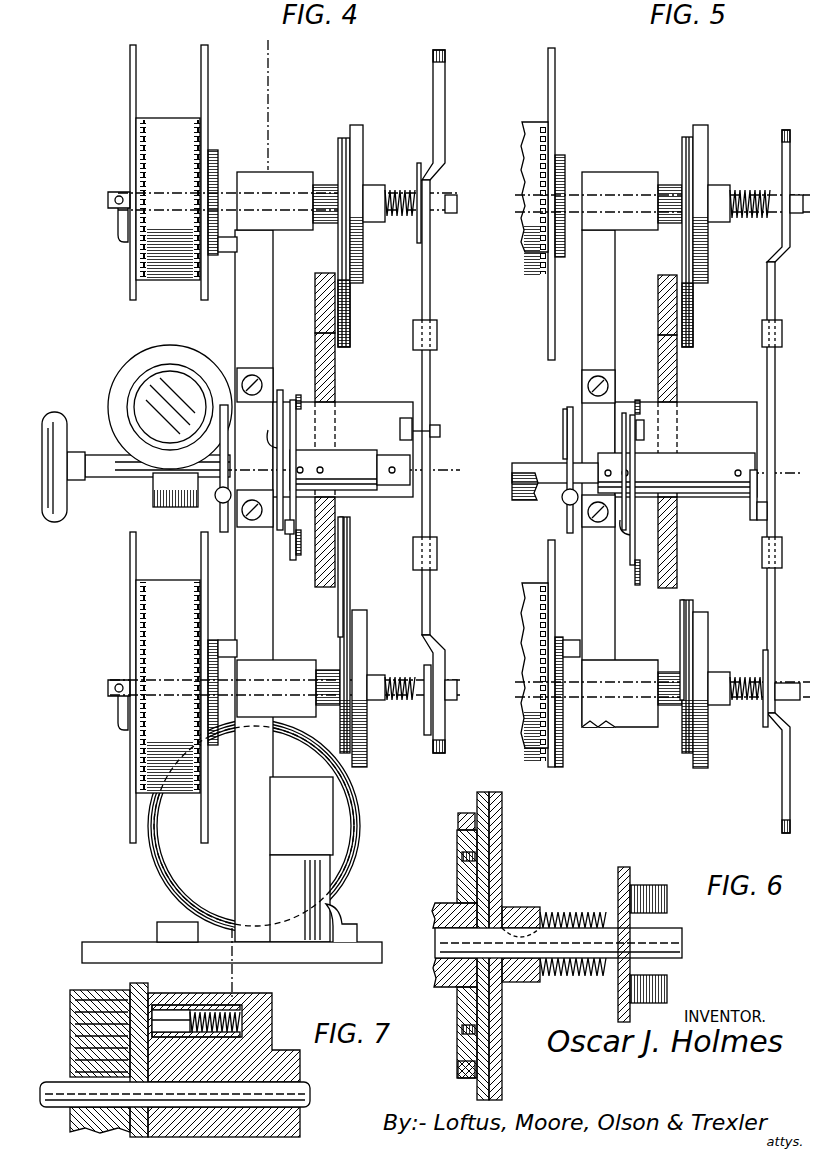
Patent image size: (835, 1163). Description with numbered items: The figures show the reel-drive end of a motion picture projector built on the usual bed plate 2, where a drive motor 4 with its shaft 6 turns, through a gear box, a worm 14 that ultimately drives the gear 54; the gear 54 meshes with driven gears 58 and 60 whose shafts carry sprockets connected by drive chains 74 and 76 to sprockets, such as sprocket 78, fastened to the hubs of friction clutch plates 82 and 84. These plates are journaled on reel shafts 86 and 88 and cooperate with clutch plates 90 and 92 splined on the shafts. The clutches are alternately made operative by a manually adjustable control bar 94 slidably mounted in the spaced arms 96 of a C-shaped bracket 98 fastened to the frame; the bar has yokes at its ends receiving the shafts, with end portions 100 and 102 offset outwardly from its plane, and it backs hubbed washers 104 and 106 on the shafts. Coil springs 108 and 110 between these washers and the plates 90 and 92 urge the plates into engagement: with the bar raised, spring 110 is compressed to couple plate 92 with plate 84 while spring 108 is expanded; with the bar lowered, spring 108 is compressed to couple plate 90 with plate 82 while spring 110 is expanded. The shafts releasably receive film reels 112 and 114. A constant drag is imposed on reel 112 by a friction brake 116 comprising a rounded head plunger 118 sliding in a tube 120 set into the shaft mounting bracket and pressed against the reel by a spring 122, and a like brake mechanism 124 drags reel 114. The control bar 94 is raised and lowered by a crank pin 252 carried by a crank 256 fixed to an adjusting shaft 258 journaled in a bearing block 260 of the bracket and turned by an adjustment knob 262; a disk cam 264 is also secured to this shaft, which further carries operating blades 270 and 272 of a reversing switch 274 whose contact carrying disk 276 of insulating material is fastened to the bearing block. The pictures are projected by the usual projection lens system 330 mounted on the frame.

In FIG. 4, the bed plate 2 is at (290, 55).
In FIG. 7, the bed plate 2 is at (209, 975).
In FIG. 4, the drive motor 4 is at (150, 847).
In FIG. 5, the motor shaft 6 is at (668, 690).
In FIG. 4, the worm 14 is at (270, 362).
In FIG. 5, the worm 14 is at (598, 448).
In FIG. 4, the gear 54 is at (335, 374).
In FIG. 5, the gear 54 is at (677, 382).
In FIG. 4, the driven gear 58 is at (335, 531).
In FIG. 5, the driven gear 58 is at (677, 556).
In FIG. 4, the driven gear 60 is at (315, 284).
In FIG. 5, the driven gear 60 is at (664, 276).
In FIG. 4, the drive chain 74 is at (342, 595).
In FIG. 5, the drive chain 74 is at (683, 600).
In FIG. 6, the drive chain 74 is at (462, 819).
In FIG. 4, the drive chain 76 is at (350, 292).
In FIG. 5, the drive chain 76 is at (693, 291).
In FIG. 6, the sprocket 78 is at (460, 880).
In FIG. 4, the friction clutch plate 82 is at (355, 627).
In FIG. 5, the friction clutch plate 82 is at (700, 620).
In FIG. 6, the friction clutch plate 82 is at (505, 855).
In FIG. 4, the friction clutch plate 84 is at (344, 136).
In FIG. 5, the friction clutch plate 84 is at (690, 135).
In FIG. 4, the reel shaft 86 is at (450, 688).
In FIG. 5, the reel shaft 86 is at (786, 683).
In FIG. 6, the reel shaft 86 is at (660, 941).
In FIG. 7, the reel shaft 86 is at (296, 1090).
In FIG. 4, the reel shaft 88 is at (446, 214).
In FIG. 5, the reel shaft 88 is at (798, 214).
In FIG. 4, the clutch plate 90 is at (370, 631).
In FIG. 5, the clutch plate 90 is at (710, 613).
In FIG. 6, the clutch plate 90 is at (504, 883).
In FIG. 4, the clutch plate 92 is at (360, 140).
In FIG. 5, the clutch plate 92 is at (705, 130).
In FIG. 4, the control bar 94 is at (430, 291).
In FIG. 5, the control bar 94 is at (767, 300).
In FIG. 4, the spaced arms 96 is at (437, 337).
In FIG. 5, the spaced arms 96 is at (779, 344).
In FIG. 4, the C-shaped bracket 98 is at (370, 407).
In FIG. 5, the C-shaped bracket 98 is at (710, 407).
In FIG. 4, the offset end portion 100 is at (442, 733).
In FIG. 5, the offset end portion 100 is at (784, 763).
In FIG. 6, the offset end portion 100 is at (642, 885).
In FIG. 4, the offset end portion 102 is at (437, 98).
In FIG. 5, the offset end portion 102 is at (787, 130).
In FIG. 4, the hubbed washer 104 is at (428, 724).
In FIG. 5, the hubbed washer 104 is at (765, 727).
In FIG. 6, the hubbed washer 104 is at (621, 868).
In FIG. 4, the hubbed washer 106 is at (417, 243).
In FIG. 4, the coil spring 108 is at (405, 673).
In FIG. 5, the coil spring 108 is at (742, 667).
In FIG. 6, the coil spring 108 is at (557, 912).
In FIG. 4, the coil spring 110 is at (396, 189).
In FIG. 5, the coil spring 110 is at (750, 190).
In FIG. 4, the film reel 112 is at (130, 767).
In FIG. 5, the film reel 112 is at (548, 566).
In FIG. 7, the film reel 112 is at (130, 981).
In FIG. 4, the film reel 114 is at (130, 88).
In FIG. 5, the film reel 114 is at (555, 100).
In FIG. 4, the friction brake 116 is at (222, 640).
In FIG. 5, the friction brake 116 is at (567, 636).
In FIG. 7, the friction brake 116 is at (160, 996).
In FIG. 7, the rounded head plunger 118 is at (177, 1013).
In FIG. 7, the tube 120 is at (200, 1005).
In FIG. 7, the spring 122 is at (232, 1024).
In FIG. 4, the brake mechanism 124 is at (224, 266).
In FIG. 5, the brake mechanism 124 is at (573, 268).
In FIG. 4, the crank pin 252 is at (440, 428).
In FIG. 5, the crank pin 252 is at (777, 508).
In FIG. 4, the crank 256 is at (410, 446).
In FIG. 5, the crank 256 is at (752, 504).
In FIG. 4, the adjusting shaft 258 is at (102, 475).
In FIG. 5, the adjusting shaft 258 is at (543, 467).
In FIG. 4, the bearing block 260 is at (346, 462).
In FIG. 5, the bearing block 260 is at (699, 457).
In FIG. 4, the adjustment knob 262 is at (58, 523).
In FIG. 4, the disk cam 264 is at (222, 508).
In FIG. 5, the disk cam 264 is at (570, 409).
In FIG. 4, the operating blade 270 is at (256, 428).
In FIG. 5, the operating blade 270 is at (620, 530).
In FIG. 4, the operating blade 272 is at (264, 506).
In FIG. 5, the operating blade 272 is at (620, 438).
In FIG. 4, the reversing switch 274 is at (281, 396).
In FIG. 5, the reversing switch 274 is at (625, 404).
In FIG. 4, the contact carrying disk 276 is at (293, 542).
In FIG. 5, the contact carrying disk 276 is at (633, 545).
In FIG. 4, the projection lens system 330 is at (122, 386).